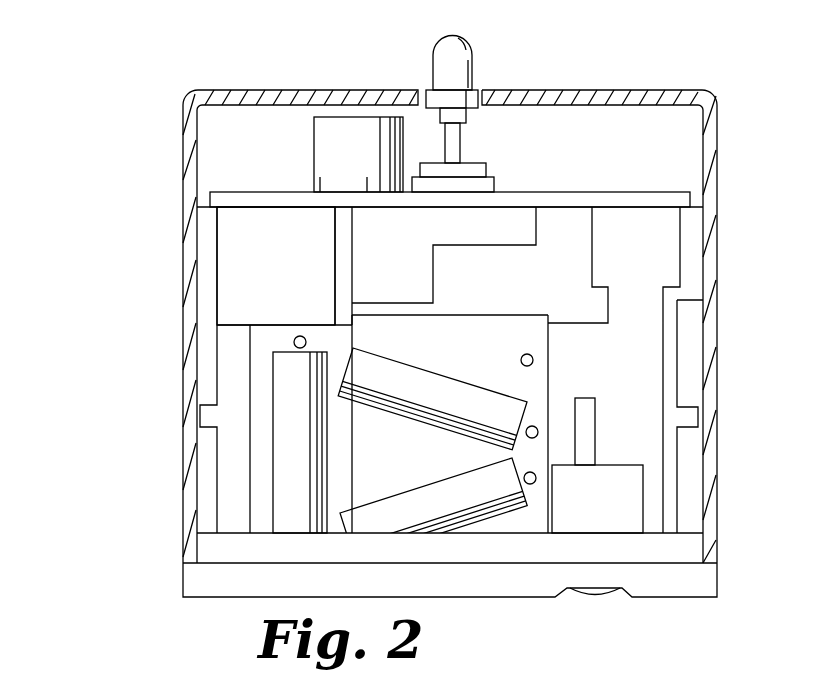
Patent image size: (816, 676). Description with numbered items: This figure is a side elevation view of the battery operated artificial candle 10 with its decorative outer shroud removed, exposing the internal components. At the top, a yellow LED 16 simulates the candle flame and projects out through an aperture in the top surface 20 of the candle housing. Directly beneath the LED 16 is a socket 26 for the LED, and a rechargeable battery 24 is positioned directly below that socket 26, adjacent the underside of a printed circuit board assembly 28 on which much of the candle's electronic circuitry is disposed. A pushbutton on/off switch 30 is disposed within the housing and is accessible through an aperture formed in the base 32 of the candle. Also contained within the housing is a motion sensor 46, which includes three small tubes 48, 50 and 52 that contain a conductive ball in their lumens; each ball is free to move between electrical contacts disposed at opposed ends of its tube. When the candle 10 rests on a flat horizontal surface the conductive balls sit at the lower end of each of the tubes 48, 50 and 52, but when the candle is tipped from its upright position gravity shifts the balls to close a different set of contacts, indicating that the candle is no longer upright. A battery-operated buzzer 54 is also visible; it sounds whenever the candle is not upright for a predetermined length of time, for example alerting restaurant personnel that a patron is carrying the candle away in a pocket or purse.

The detection device 10 is at (138, 338).
The yellow LED 16 is at (472, 72).
The top surface 20 is at (600, 90).
The rechargeable battery 24 is at (296, 279).
The socket 26 is at (475, 160).
The printed circuit board assembly 28 is at (573, 192).
The pushbutton on/off switch 30 is at (613, 514).
The base 32 is at (672, 597).
The motion sensor 46 is at (390, 469).
The tube 48 is at (272, 458).
The tube 50 is at (512, 516).
The tube 52 is at (432, 372).
The battery-operated buzzer 54 is at (370, 164).